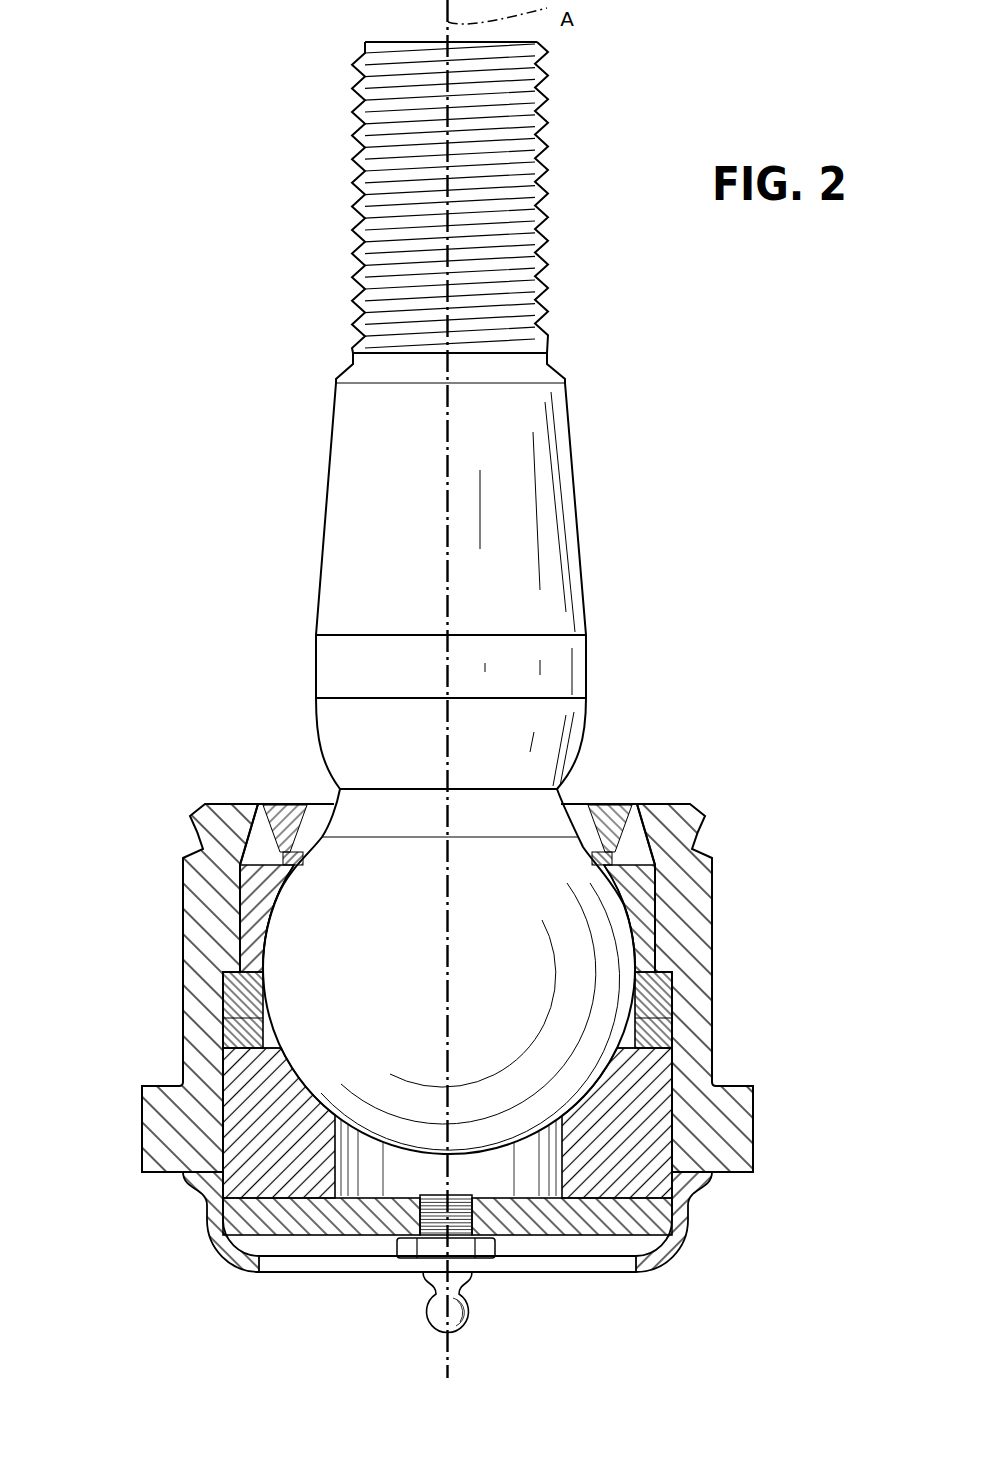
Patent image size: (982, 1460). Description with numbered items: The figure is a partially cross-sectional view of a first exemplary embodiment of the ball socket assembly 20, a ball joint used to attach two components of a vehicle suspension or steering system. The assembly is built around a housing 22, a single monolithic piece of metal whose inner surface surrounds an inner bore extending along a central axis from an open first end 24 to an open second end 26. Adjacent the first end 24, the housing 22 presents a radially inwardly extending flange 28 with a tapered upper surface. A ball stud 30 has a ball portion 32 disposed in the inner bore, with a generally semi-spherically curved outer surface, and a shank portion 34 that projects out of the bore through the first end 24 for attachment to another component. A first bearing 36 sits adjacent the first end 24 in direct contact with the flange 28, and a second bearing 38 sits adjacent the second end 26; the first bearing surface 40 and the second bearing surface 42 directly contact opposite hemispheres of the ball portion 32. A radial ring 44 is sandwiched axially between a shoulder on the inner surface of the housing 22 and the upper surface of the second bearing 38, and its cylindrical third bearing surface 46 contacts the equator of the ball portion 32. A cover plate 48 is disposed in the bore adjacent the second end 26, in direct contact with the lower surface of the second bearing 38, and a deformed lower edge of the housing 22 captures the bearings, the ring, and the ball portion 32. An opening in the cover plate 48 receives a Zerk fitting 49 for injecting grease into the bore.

The ball socket assembly 20 is at (715, 724).
The housing 22 is at (720, 917).
The open first end 24 is at (597, 801).
The open second end 26 is at (634, 1274).
The radially inwardly extending flange 28 is at (646, 849).
The ball stud 30 is at (438, 598).
The ball portion 32 is at (363, 992).
The shank portion 34 is at (345, 587).
The first bearing 36 is at (247, 932).
The second bearing 38 is at (260, 1172).
The first bearing surface 40 is at (295, 893).
The second bearing surface 42 is at (252, 1055).
The radial ring 44 is at (655, 1028).
The third bearing surface 46 is at (252, 1014).
The cover plate 48 is at (295, 1228).
The Zerk fitting 49 is at (460, 1313).